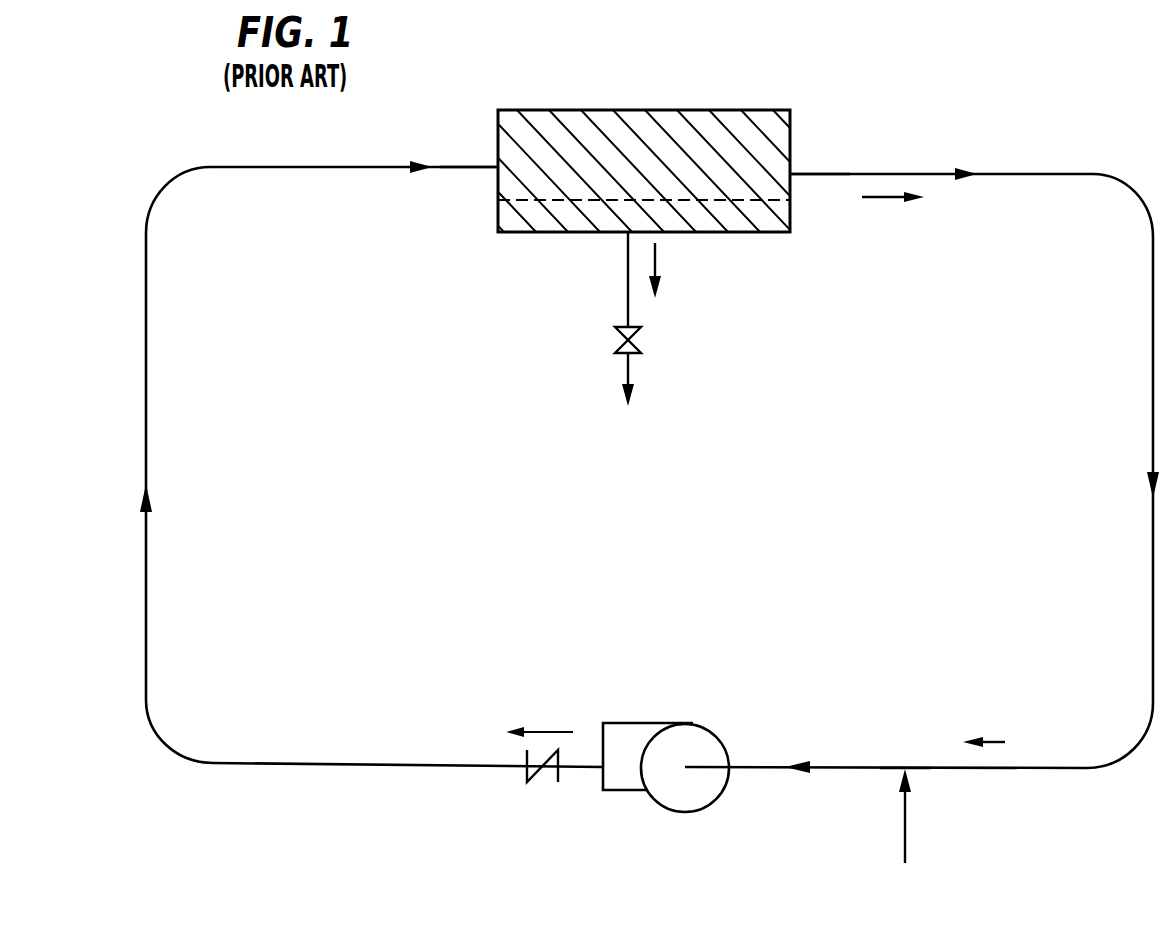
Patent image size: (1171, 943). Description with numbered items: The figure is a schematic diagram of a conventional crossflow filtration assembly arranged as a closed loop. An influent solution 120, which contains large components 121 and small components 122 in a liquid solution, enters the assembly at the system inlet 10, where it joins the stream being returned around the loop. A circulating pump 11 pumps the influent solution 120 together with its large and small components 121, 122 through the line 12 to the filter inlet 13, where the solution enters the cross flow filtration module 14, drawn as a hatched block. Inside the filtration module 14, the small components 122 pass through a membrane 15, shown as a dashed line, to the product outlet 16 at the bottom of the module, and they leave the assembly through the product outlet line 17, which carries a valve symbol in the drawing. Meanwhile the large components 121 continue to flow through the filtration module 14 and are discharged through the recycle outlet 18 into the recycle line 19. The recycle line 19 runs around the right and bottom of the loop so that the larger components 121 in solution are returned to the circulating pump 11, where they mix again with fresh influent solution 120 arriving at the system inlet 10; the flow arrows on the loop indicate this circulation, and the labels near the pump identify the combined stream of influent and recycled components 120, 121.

The system inlet 10 is at (894, 768).
The circulating pump 11 is at (700, 740).
The line 12 is at (147, 455).
The filter inlet 13 is at (494, 168).
The cross flow filtration module 14 is at (636, 125).
The membrane 15 is at (621, 199).
The product outlet 16 is at (625, 238).
The product outlet line 17 is at (629, 310).
The recycle outlet 18 is at (793, 170).
The recycle line 19 is at (1152, 388).
The influent solution 120 is at (906, 824).
The large components 121 is at (953, 477).
The small components 122 is at (672, 270).